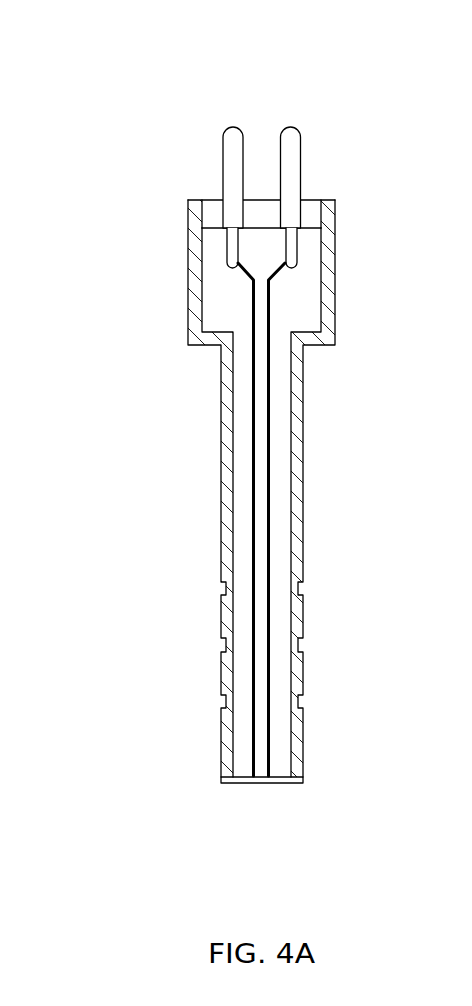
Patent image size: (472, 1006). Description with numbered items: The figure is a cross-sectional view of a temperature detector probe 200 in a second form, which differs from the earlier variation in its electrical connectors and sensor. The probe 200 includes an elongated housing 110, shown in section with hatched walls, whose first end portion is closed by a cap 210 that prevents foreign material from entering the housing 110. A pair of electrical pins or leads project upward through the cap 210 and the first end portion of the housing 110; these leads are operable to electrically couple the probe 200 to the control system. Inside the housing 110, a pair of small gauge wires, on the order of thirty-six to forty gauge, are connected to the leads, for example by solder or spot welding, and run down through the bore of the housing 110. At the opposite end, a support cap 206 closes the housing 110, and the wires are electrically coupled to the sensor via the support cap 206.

The temperature detector probe 200 is at (162, 125).
The housing 110 is at (302, 512).
The cap 210 is at (312, 206).
The support cap 206 is at (263, 783).